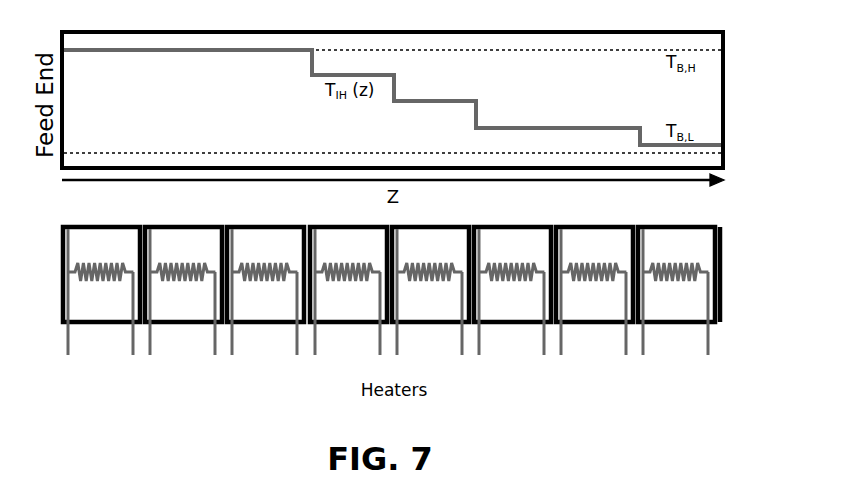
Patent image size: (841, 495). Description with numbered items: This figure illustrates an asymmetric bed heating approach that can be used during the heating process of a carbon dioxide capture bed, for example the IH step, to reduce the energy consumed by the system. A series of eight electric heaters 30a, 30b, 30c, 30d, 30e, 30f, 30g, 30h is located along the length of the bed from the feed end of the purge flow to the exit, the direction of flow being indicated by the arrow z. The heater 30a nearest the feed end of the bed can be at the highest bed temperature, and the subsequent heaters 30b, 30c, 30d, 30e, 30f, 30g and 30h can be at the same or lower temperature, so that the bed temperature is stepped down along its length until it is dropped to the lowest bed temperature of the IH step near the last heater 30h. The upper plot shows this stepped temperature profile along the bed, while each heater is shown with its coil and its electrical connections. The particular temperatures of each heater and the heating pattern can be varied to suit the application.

The electric heater 30a is at (101, 287).
The electric heater 30b is at (183, 287).
The electric heater 30c is at (265, 287).
The electric heater 30d is at (348, 287).
The electric heater 30e is at (430, 287).
The electric heater 30f is at (512, 287).
The electric heater 30g is at (594, 287).
The electric heater 30h is at (676, 287).